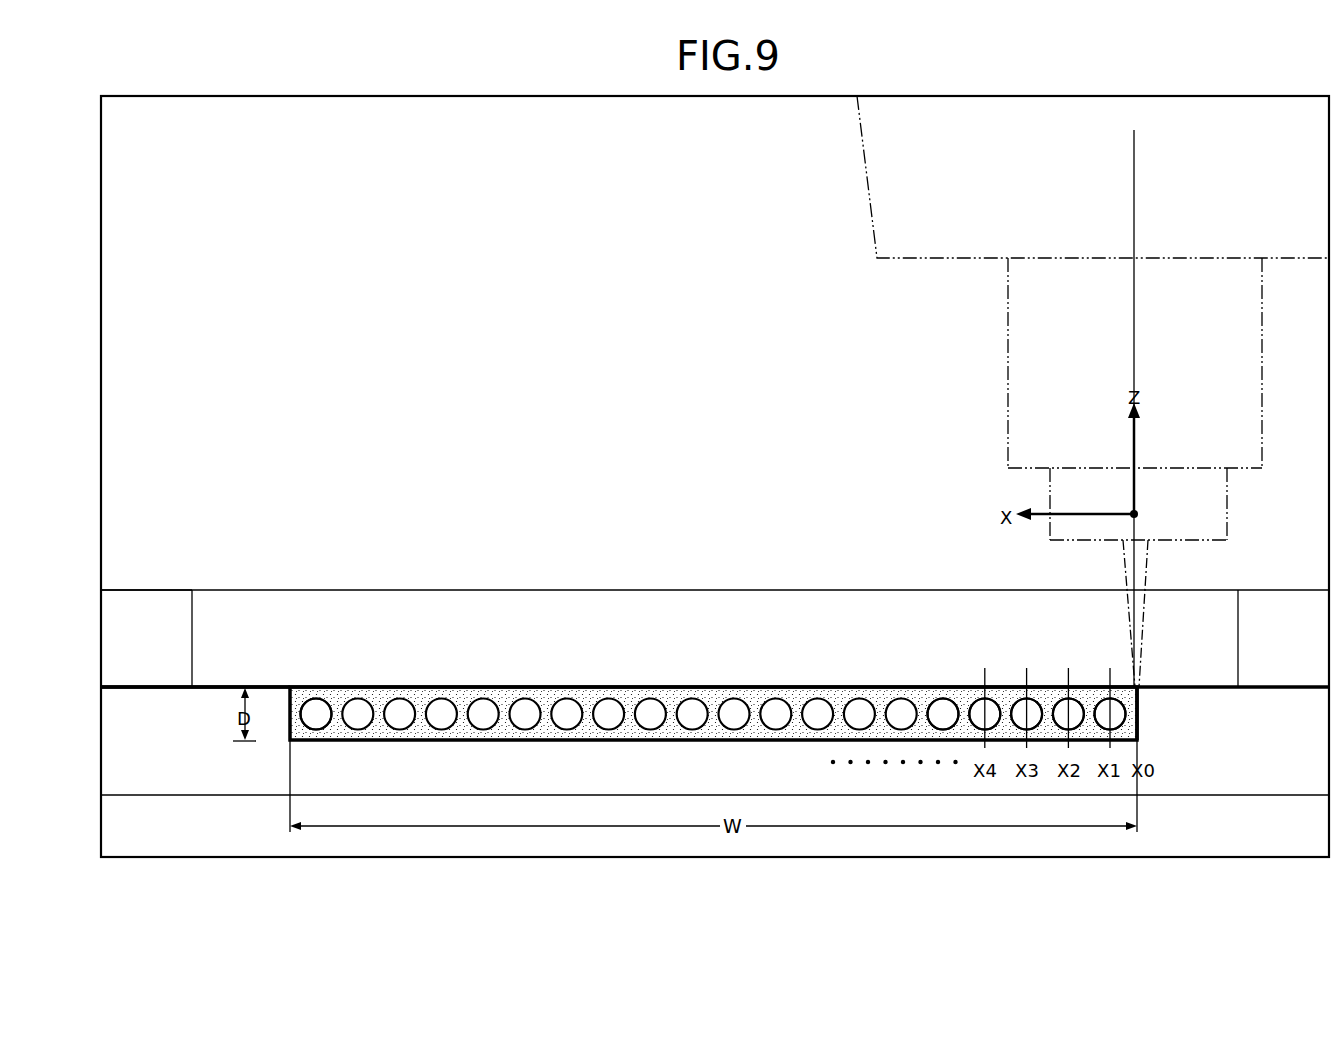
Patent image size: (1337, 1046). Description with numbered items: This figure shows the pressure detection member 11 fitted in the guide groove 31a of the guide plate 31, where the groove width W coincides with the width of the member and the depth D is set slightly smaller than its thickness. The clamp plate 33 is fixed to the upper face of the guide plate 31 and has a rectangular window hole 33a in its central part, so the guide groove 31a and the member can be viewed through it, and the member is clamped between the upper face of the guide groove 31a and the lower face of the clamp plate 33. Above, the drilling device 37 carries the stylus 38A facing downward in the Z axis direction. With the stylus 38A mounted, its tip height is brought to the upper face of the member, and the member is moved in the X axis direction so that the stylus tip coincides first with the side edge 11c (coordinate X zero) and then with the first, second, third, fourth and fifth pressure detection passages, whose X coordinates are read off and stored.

The pressure detection member 11 is at (732, 681).
The side edge 11c is at (1140, 715).
The guide plate 31 is at (221, 681).
The guide groove 31a is at (300, 713).
The clamp plate 33 is at (156, 583).
The window hole 33a is at (192, 620).
The drilling device 37 is at (867, 193).
The stylus 38A is at (1142, 623).